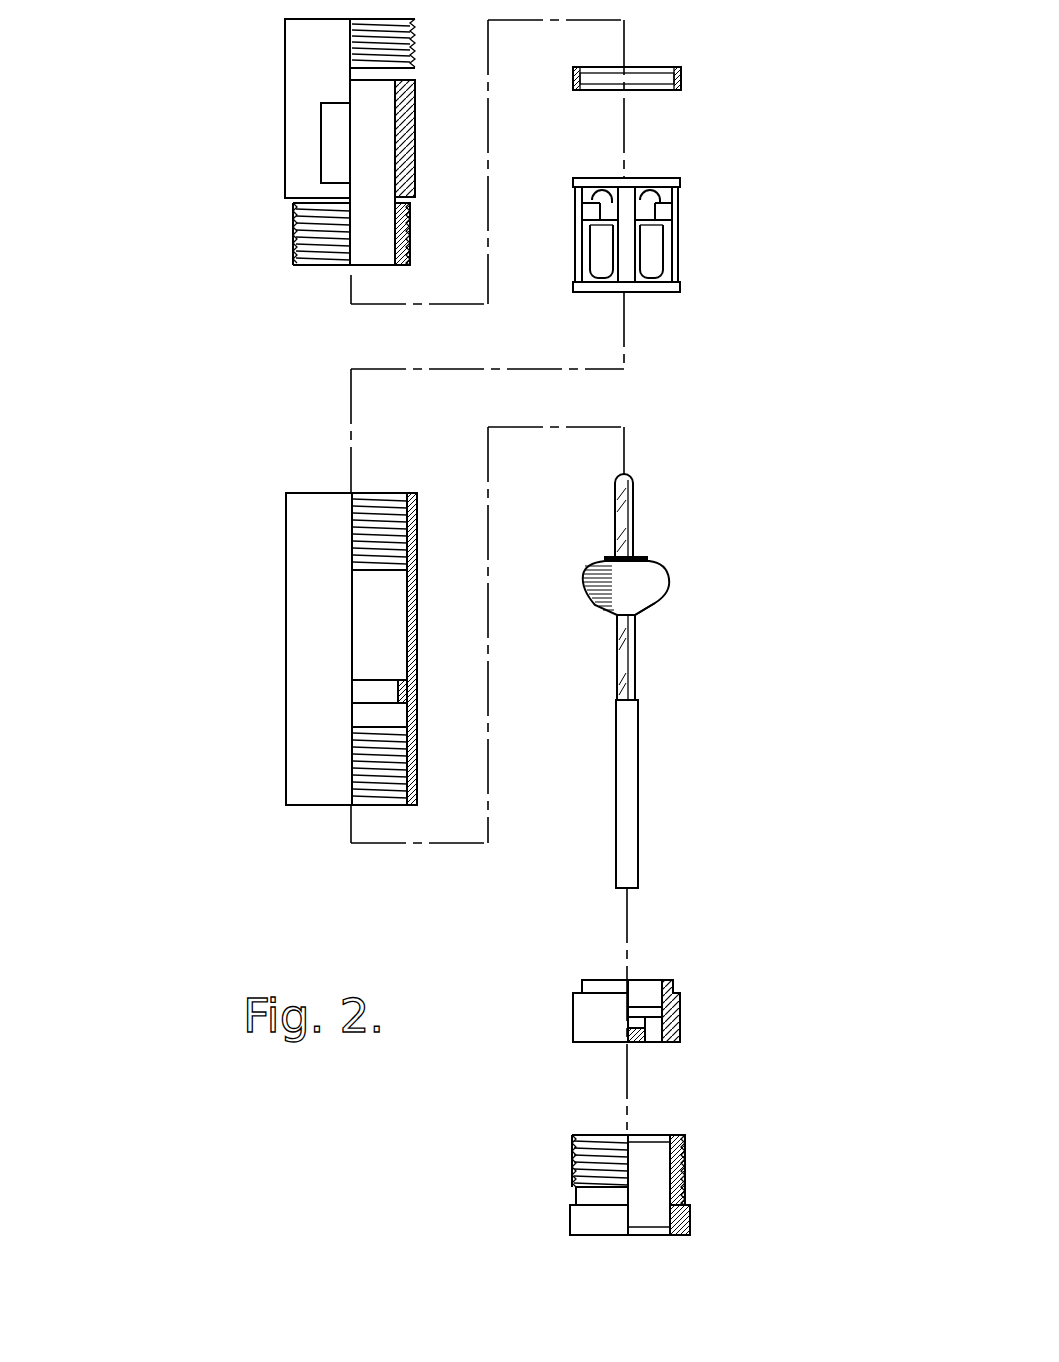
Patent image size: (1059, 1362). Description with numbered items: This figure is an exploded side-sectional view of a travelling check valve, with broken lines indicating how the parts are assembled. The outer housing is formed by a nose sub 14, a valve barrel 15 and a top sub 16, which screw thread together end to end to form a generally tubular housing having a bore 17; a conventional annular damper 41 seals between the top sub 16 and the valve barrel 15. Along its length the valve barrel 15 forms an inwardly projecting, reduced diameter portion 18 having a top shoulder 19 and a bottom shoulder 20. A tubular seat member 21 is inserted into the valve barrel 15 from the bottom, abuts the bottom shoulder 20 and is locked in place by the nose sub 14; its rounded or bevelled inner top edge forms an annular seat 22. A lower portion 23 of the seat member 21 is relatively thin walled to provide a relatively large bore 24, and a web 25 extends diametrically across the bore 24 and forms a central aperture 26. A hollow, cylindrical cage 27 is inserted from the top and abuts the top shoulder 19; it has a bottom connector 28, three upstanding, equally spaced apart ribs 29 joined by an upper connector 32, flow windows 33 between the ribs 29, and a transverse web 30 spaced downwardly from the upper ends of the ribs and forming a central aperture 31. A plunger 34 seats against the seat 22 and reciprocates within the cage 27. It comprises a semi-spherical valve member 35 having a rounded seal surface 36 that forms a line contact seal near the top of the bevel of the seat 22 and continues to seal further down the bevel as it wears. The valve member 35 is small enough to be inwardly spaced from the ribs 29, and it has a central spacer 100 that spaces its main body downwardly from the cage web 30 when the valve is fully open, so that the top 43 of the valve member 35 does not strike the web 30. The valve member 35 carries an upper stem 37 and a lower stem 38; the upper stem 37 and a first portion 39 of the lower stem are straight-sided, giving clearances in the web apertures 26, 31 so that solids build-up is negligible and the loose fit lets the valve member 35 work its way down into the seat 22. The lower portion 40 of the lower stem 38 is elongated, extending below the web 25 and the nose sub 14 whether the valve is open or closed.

The nose sub 14 is at (568, 1181).
The valve barrel 15 is at (281, 625).
The top sub 16 is at (280, 141).
The bore 17 is at (383, 157).
The reduced diameter portion 18 is at (410, 693).
The top shoulder 19 is at (405, 666).
The bottom shoulder 20 is at (408, 720).
The seat member 21 is at (572, 1014).
The annular seat 22 is at (658, 980).
The lower portion 23 is at (680, 1028).
The bore 24 is at (657, 1036).
The web 25 is at (638, 1044).
The central aperture 26 is at (632, 1032).
The cage 27 is at (581, 212).
The bottom connector 28 is at (668, 292).
The ribs 29 is at (630, 241).
The transverse web 30 is at (678, 215).
The central aperture 31 is at (641, 202).
The upper connector 32 is at (596, 178).
The flow windows 33 is at (604, 256).
The plunger 34 is at (601, 601).
The semi-spherical valve member 35 is at (660, 585).
The rounded seal surface 36 is at (654, 604).
The upper stem 37 is at (635, 500).
The lower stem 38 is at (638, 758).
The first portion 39 is at (618, 654).
The lower portion 40 is at (619, 806).
The annular damper 41 is at (663, 67).
The top 43 is at (650, 564).
The central spacer 100 is at (610, 556).